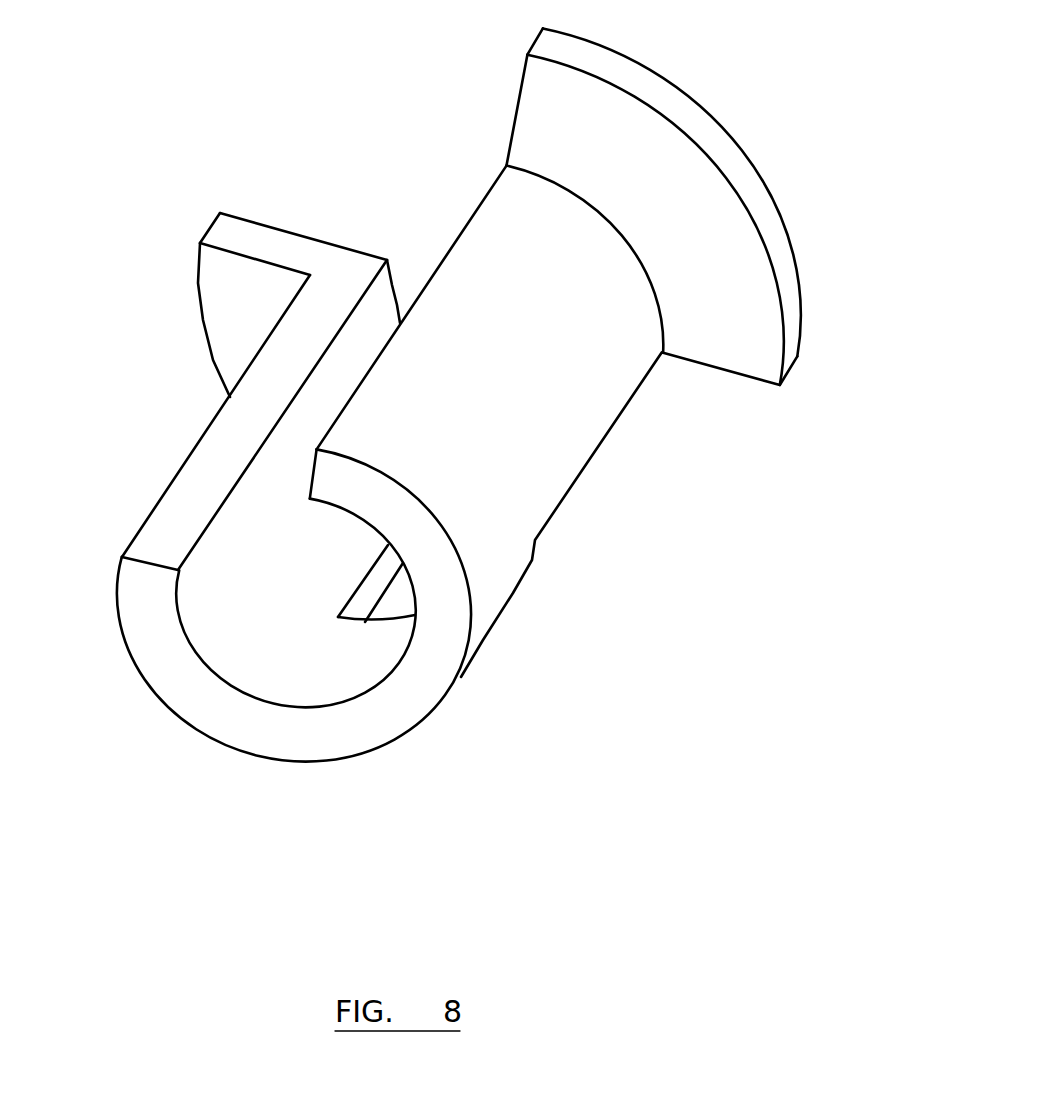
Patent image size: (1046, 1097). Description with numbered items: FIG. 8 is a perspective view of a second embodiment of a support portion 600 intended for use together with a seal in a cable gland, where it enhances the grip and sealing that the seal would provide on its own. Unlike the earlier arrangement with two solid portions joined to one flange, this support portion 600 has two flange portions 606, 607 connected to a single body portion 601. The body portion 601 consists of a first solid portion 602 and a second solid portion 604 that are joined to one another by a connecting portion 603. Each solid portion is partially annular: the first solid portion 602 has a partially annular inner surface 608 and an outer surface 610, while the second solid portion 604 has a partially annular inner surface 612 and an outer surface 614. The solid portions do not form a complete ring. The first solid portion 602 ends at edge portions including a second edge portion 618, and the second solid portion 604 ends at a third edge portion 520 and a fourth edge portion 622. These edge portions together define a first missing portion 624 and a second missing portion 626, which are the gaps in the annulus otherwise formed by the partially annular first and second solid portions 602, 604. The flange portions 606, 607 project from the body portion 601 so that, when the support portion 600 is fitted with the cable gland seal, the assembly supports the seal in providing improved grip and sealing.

The support portion 600 is at (598, 607).
The body portion 601 is at (332, 732).
The first solid portion 602 is at (477, 492).
The connecting portion 603 is at (370, 657).
The second solid portion 604 is at (210, 615).
The flange portion 606 is at (662, 185).
The flange portion 607 is at (223, 293).
The inner surface 608 is at (327, 513).
The outer surface 610 is at (577, 415).
The inner surface 612 is at (243, 562).
The outer surface 614 is at (126, 533).
The second edge portion 618 is at (304, 466).
The fourth edge portion 622 is at (282, 358).
The first missing portion 624 is at (506, 166).
The second missing portion 626 is at (385, 599).
The third edge portion 520 is at (349, 593).